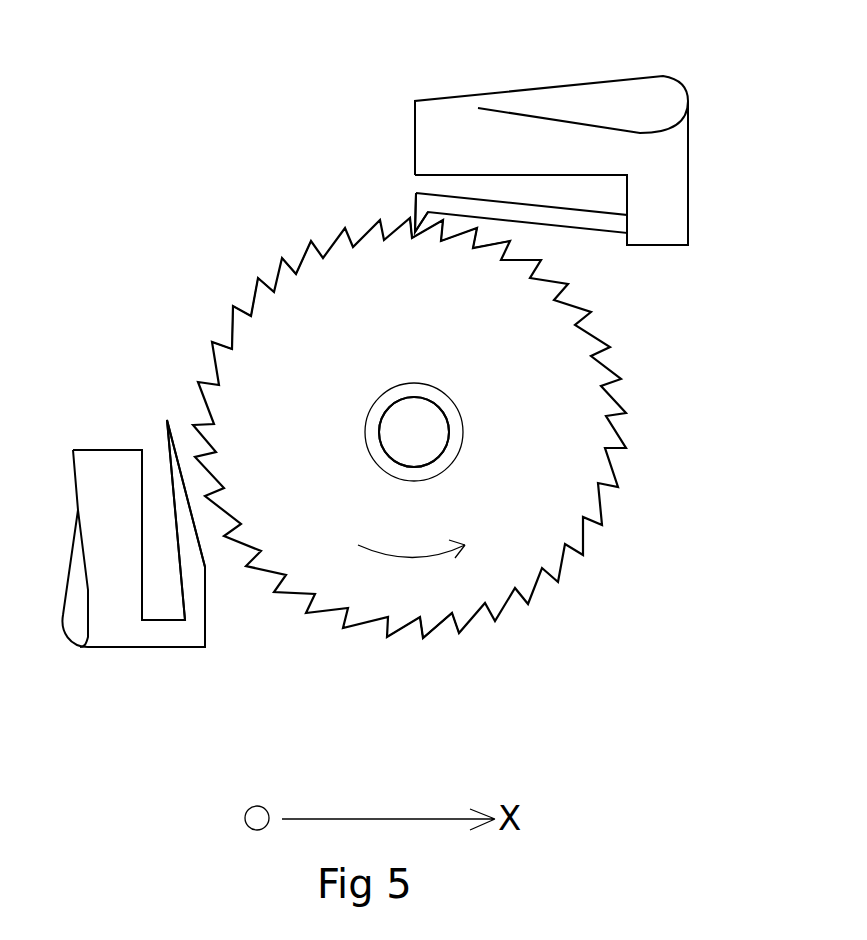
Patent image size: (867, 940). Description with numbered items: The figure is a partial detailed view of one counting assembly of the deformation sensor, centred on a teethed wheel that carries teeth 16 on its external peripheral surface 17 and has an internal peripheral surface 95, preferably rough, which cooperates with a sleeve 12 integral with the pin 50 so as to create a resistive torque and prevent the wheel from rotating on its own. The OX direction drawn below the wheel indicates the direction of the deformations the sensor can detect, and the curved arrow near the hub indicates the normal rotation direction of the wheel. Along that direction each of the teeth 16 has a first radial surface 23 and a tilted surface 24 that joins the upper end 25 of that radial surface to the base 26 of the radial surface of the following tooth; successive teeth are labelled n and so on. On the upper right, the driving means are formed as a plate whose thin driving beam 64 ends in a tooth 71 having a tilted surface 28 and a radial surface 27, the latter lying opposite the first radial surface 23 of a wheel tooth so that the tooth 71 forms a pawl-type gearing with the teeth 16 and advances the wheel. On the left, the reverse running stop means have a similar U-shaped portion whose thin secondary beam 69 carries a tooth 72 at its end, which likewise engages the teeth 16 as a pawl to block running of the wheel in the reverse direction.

The sleeve 12 is at (382, 413).
The teeth 16 is at (200, 408).
The external peripheral surface 17 is at (343, 208).
The first radial surface 23 is at (418, 635).
The tilted surface 24 is at (435, 635).
The upper end 25 is at (418, 643).
The base 26 is at (462, 613).
The radial surface 27 is at (414, 218).
The tilted surface 28 is at (418, 222).
The pin 50 is at (414, 432).
The secondary beam 64 is at (566, 220).
The secondary beam 69 is at (190, 560).
The tooth 71 is at (408, 212).
The tooth 72 is at (175, 423).
The internal peripheral surface 95 is at (377, 464).
The tooth n is at (405, 232).